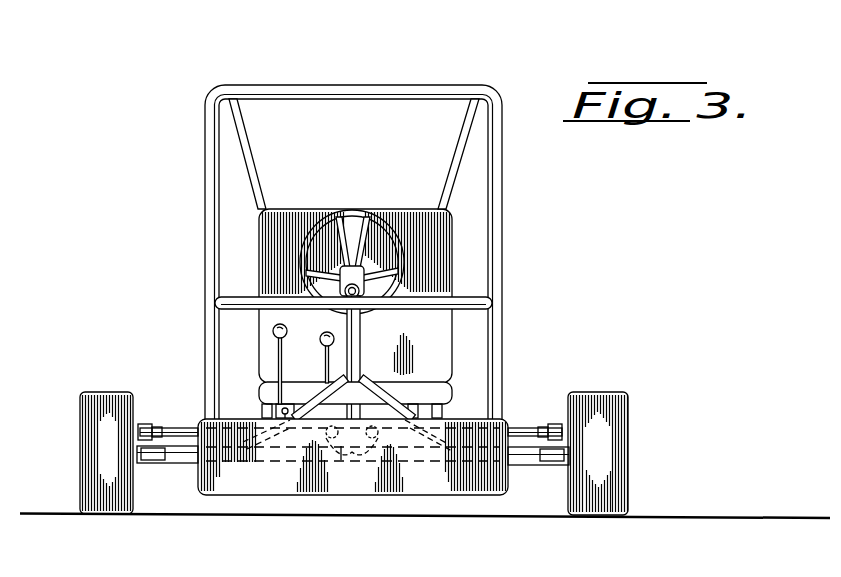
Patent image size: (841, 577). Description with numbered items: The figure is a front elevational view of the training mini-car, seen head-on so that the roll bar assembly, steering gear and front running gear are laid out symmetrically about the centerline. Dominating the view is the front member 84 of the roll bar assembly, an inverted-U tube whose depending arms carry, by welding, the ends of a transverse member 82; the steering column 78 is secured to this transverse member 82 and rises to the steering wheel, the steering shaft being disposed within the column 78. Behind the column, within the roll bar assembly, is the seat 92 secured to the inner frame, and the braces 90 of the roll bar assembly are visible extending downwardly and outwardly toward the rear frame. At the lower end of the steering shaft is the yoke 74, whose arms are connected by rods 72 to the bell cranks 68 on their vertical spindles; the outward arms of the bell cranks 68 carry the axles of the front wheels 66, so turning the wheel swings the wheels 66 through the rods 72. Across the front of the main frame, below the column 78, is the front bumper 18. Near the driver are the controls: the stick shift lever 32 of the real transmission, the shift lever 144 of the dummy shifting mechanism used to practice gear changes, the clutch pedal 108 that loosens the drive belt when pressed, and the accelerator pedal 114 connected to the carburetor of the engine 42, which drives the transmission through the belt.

The front bumper 18 is at (252, 480).
The stick shift lever 32 is at (322, 363).
The engine 42 is at (405, 392).
The front wheels 66 is at (93, 406).
The bell cranks 68 is at (552, 422).
The rods 72 is at (176, 428).
The yoke 74 is at (338, 468).
The steering column 78 is at (360, 334).
The transverse member 82 is at (462, 300).
The front member of roll bar assembly 84 is at (462, 87).
The braces 90 is at (255, 147).
The seat 92 is at (290, 212).
The clutch pedal 108 is at (447, 392).
The accelerator pedal 114 is at (267, 407).
The shift lever 144 is at (278, 350).